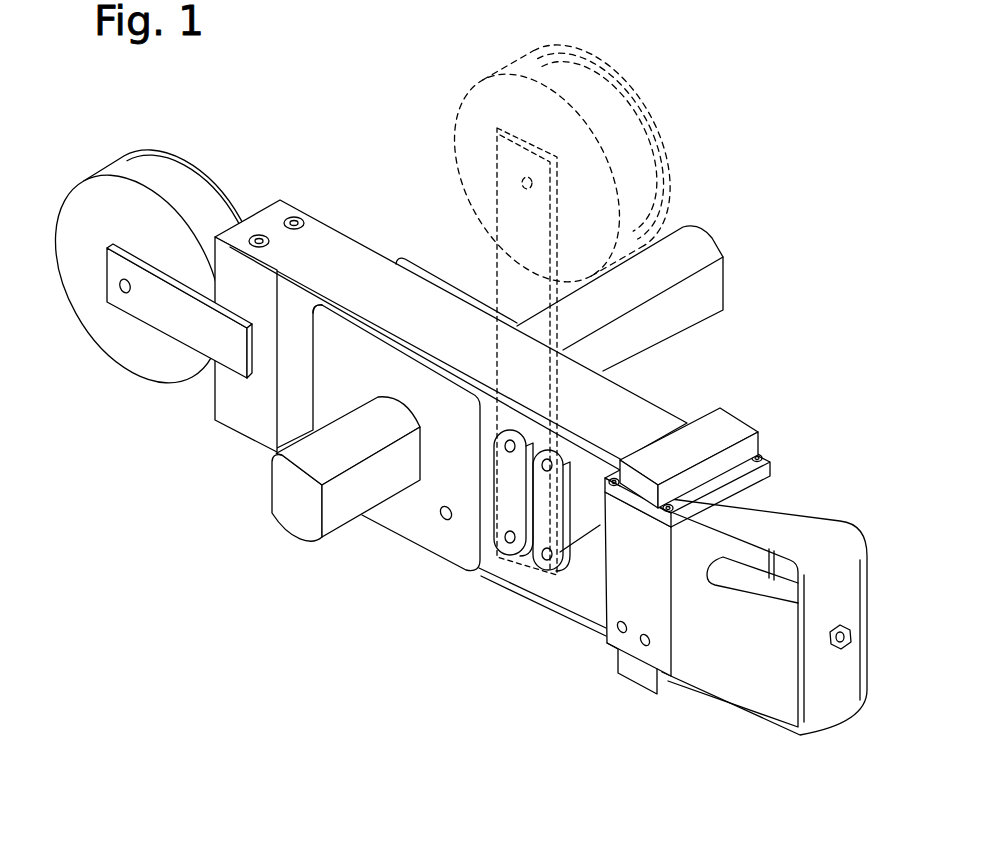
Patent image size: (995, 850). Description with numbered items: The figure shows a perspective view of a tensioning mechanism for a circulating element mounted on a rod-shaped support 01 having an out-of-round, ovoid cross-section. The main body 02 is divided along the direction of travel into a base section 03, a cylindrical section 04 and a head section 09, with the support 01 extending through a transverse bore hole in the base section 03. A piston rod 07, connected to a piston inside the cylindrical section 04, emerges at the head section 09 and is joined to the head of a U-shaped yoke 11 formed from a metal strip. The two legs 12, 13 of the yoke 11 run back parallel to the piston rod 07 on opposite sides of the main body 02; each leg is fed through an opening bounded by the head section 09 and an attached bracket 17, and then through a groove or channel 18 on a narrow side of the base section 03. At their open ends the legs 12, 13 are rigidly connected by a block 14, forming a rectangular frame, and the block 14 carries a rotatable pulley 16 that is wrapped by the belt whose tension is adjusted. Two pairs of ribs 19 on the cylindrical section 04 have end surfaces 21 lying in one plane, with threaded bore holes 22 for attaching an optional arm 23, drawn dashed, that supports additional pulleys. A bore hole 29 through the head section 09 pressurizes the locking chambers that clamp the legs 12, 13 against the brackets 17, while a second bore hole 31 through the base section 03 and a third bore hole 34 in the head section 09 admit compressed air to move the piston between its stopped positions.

The rod-shaped support 01 is at (290, 503).
The main body 02 is at (445, 584).
The base section 03 is at (340, 395).
The cylindrical section 04 is at (580, 535).
The piston rod 07 is at (763, 600).
The head section 09 is at (688, 620).
The U-shaped yoke 11 is at (828, 707).
The leg of the U-shaped yoke 12 is at (630, 413).
The leg of the U-shaped yoke 13 is at (594, 606).
The block 14 is at (240, 280).
The rotatable pulley 16 is at (98, 322).
The bracket 17 is at (727, 423).
The groove or channel 18 is at (478, 378).
The ribs 19 is at (564, 505).
The end surfaces 21 is at (540, 556).
The threaded bore holes 22 is at (503, 533).
The arm 23 is at (510, 230).
The bore hole 29 is at (650, 647).
The second bore hole 31 is at (442, 517).
The third bore hole 34 is at (618, 637).